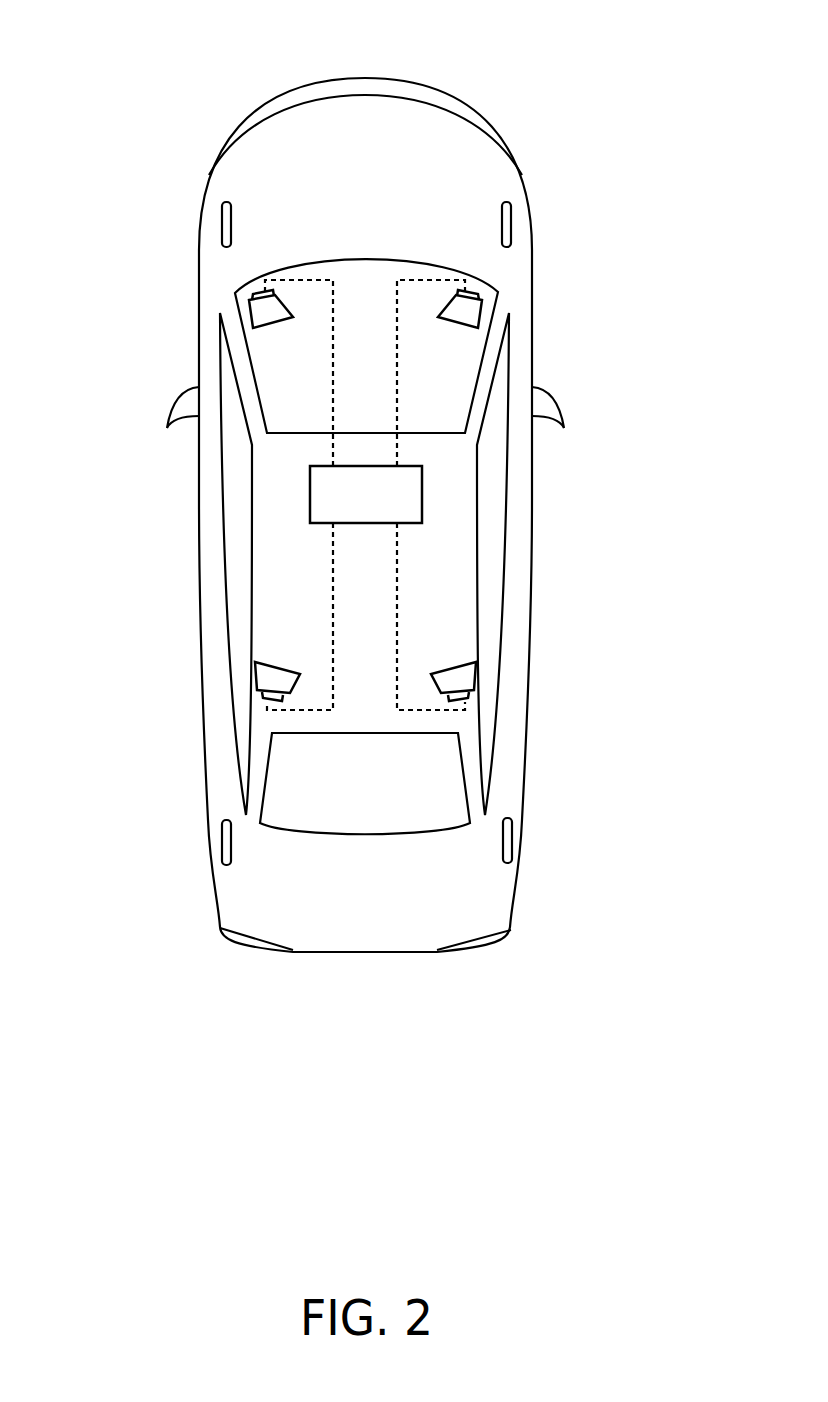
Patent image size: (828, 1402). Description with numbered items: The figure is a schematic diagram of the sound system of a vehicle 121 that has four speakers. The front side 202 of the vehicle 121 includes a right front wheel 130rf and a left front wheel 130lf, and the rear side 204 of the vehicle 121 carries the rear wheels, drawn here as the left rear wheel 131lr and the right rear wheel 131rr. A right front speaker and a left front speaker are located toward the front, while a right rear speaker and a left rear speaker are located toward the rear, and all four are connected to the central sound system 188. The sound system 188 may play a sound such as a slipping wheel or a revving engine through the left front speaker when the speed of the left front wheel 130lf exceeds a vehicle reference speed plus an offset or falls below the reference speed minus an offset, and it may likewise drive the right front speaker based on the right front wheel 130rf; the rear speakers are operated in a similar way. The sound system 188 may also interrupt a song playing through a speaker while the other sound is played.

The vehicle 121 is at (513, 950).
The front side 202 is at (340, 29).
The rear side 204 is at (362, 986).
The left front wheel 130lf is at (224, 246).
The right front wheel 130rf is at (511, 247).
The left rear microphone 131lr is at (224, 865).
The right rear microphone 131rr is at (511, 865).
The sound system 188 is at (365, 495).